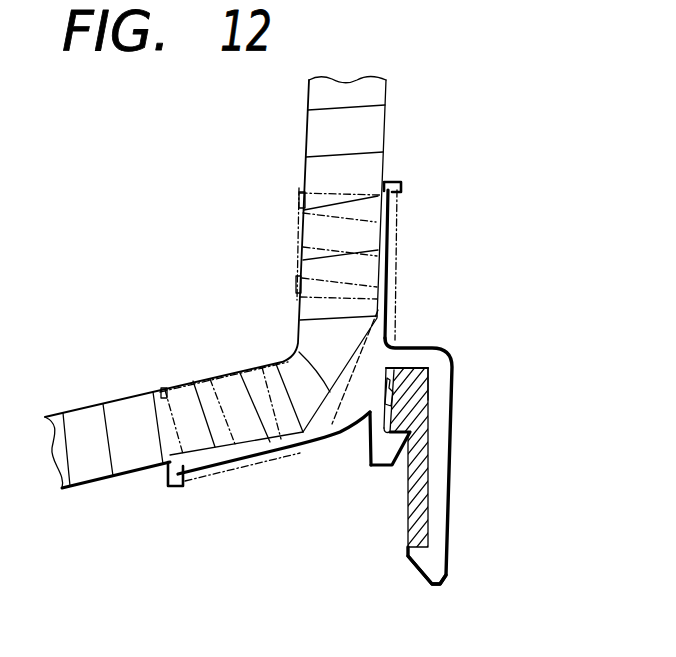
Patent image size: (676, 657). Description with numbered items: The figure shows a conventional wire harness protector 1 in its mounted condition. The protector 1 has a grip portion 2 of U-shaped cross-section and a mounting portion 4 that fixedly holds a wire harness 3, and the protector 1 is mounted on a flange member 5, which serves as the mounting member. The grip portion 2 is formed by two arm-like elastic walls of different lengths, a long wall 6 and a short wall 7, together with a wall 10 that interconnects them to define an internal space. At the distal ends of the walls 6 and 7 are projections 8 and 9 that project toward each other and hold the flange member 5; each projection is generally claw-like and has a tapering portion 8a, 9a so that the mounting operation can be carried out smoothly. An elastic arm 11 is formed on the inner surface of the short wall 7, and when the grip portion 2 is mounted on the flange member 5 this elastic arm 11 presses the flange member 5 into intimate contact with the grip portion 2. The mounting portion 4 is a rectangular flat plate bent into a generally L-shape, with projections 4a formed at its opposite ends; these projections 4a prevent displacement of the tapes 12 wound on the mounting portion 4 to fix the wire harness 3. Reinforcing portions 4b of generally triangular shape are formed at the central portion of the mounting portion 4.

The wire harness protector 1 is at (440, 242).
The grip portion 2 is at (470, 398).
The wire harness 3 is at (125, 410).
The mounting portion 4 is at (309, 452).
The projections 4a is at (403, 187).
The reinforcing portions 4b is at (299, 352).
The flange member 5 is at (420, 488).
The long wall 6 is at (437, 447).
The short wall 7 is at (365, 435).
The projection 8 is at (417, 556).
The tapering portion 8a is at (417, 566).
The projection 9 is at (375, 467).
The tapering portion 9a is at (403, 452).
The wall 10 is at (430, 347).
The elastic arm 11 is at (422, 380).
The tapes 12 is at (314, 228).